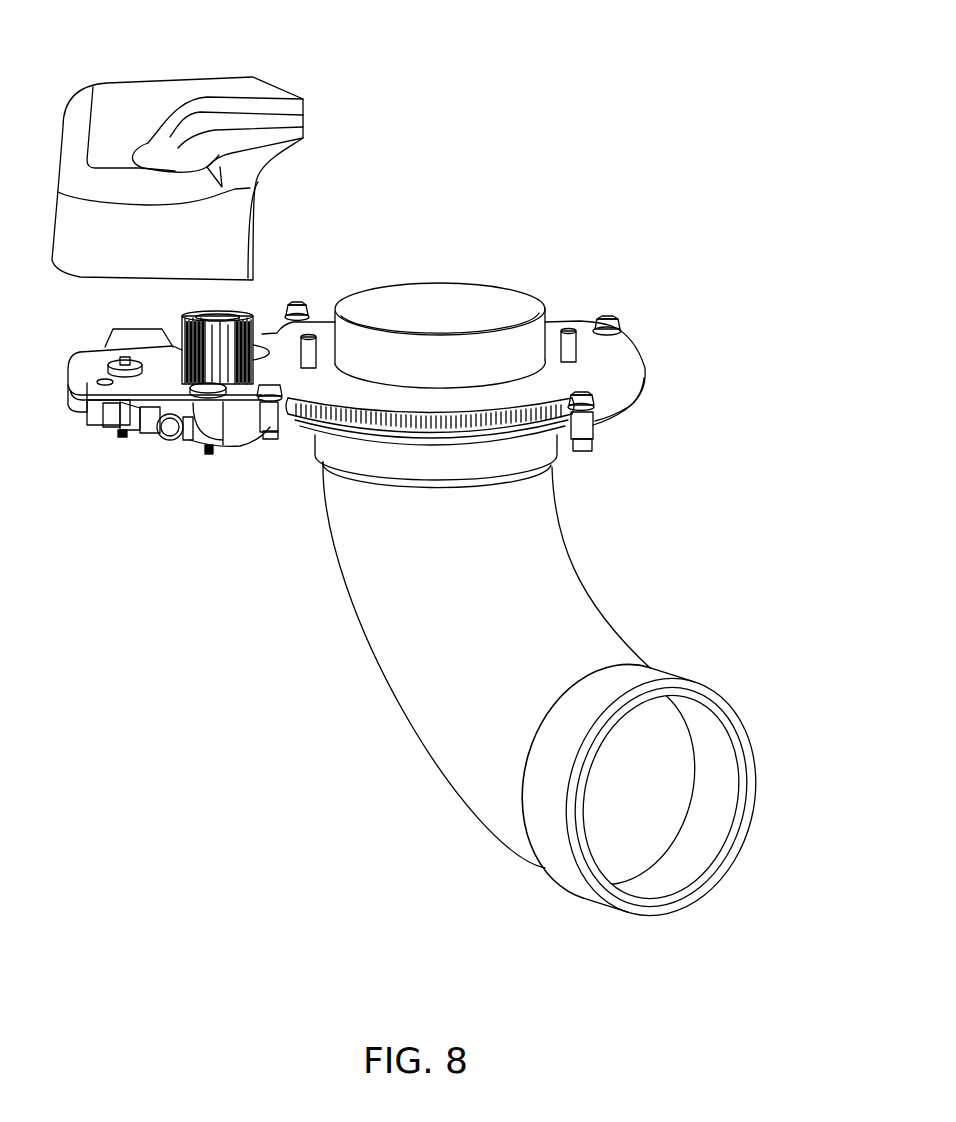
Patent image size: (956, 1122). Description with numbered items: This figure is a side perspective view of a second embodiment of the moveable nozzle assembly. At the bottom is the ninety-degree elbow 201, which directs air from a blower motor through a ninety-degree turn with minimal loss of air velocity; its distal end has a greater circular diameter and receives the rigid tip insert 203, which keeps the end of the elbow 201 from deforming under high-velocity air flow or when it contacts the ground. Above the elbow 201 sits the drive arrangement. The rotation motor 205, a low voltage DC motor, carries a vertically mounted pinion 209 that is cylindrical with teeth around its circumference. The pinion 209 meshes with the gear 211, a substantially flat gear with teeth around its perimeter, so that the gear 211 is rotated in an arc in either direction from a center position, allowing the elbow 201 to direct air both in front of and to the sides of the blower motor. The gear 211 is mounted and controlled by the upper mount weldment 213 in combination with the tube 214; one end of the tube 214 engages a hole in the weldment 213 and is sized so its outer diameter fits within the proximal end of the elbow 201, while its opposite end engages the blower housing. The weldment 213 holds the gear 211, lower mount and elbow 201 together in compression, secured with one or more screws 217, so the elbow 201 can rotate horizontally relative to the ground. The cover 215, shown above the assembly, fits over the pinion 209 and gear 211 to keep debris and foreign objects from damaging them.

The 90 degree elbow 201 is at (565, 605).
The rigid tip insert 203 is at (717, 772).
The rotation motor 205 is at (127, 430).
The pinion 209 is at (250, 313).
The gear 211 is at (510, 430).
The upper mount weldment 213 is at (627, 368).
The tube 214 is at (493, 300).
The cover 215 is at (142, 96).
The screws 217 is at (614, 318).